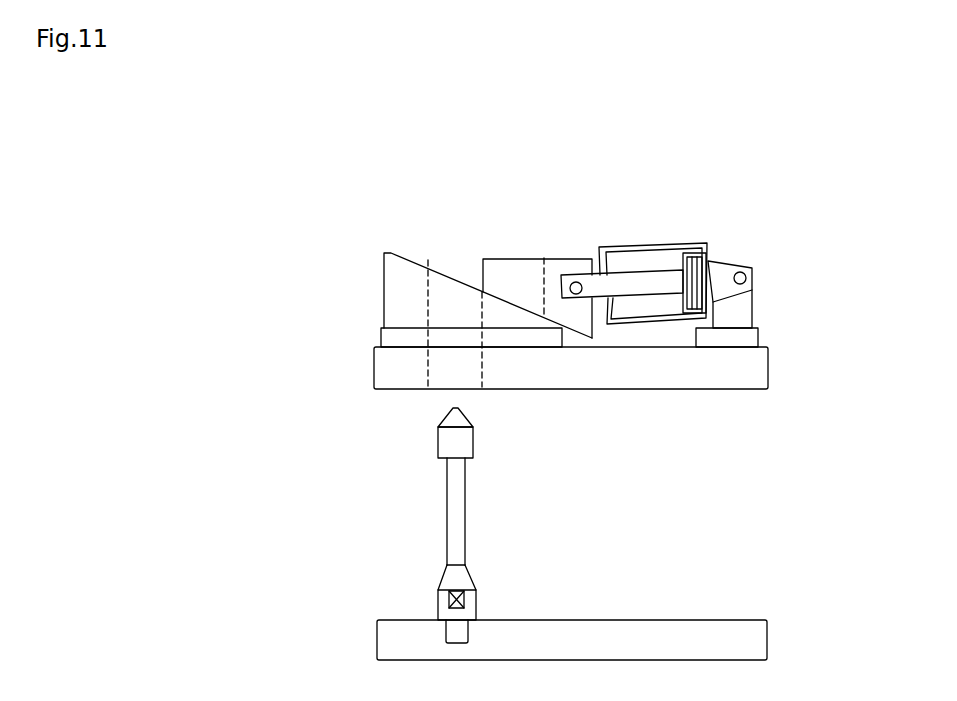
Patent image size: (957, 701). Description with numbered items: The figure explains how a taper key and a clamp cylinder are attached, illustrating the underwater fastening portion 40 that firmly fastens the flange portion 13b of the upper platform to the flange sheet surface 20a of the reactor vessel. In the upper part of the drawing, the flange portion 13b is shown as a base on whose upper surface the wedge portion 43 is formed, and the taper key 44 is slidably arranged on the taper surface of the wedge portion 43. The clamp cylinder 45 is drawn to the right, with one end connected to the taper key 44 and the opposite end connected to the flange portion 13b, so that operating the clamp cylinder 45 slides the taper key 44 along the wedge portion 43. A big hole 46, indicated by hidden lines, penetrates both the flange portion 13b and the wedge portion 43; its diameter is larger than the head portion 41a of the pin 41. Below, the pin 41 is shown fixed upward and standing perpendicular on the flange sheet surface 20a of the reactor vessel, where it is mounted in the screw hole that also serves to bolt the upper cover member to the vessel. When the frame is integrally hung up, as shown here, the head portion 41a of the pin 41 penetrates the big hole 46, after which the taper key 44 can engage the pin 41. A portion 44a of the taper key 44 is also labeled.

The underwater fastening portion 40 is at (272, 308).
The flange portion 13b is at (383, 380).
The wedge portion 43 is at (383, 293).
The taper key 44 is at (512, 272).
The engagement hole of slide block 44a is at (542, 285).
The clamp cylinder 45 is at (647, 258).
The big hole 46 is at (428, 260).
The pin 41 is at (465, 515).
The head portion 41a is at (465, 443).
The flange sheet surface 20a is at (659, 619).